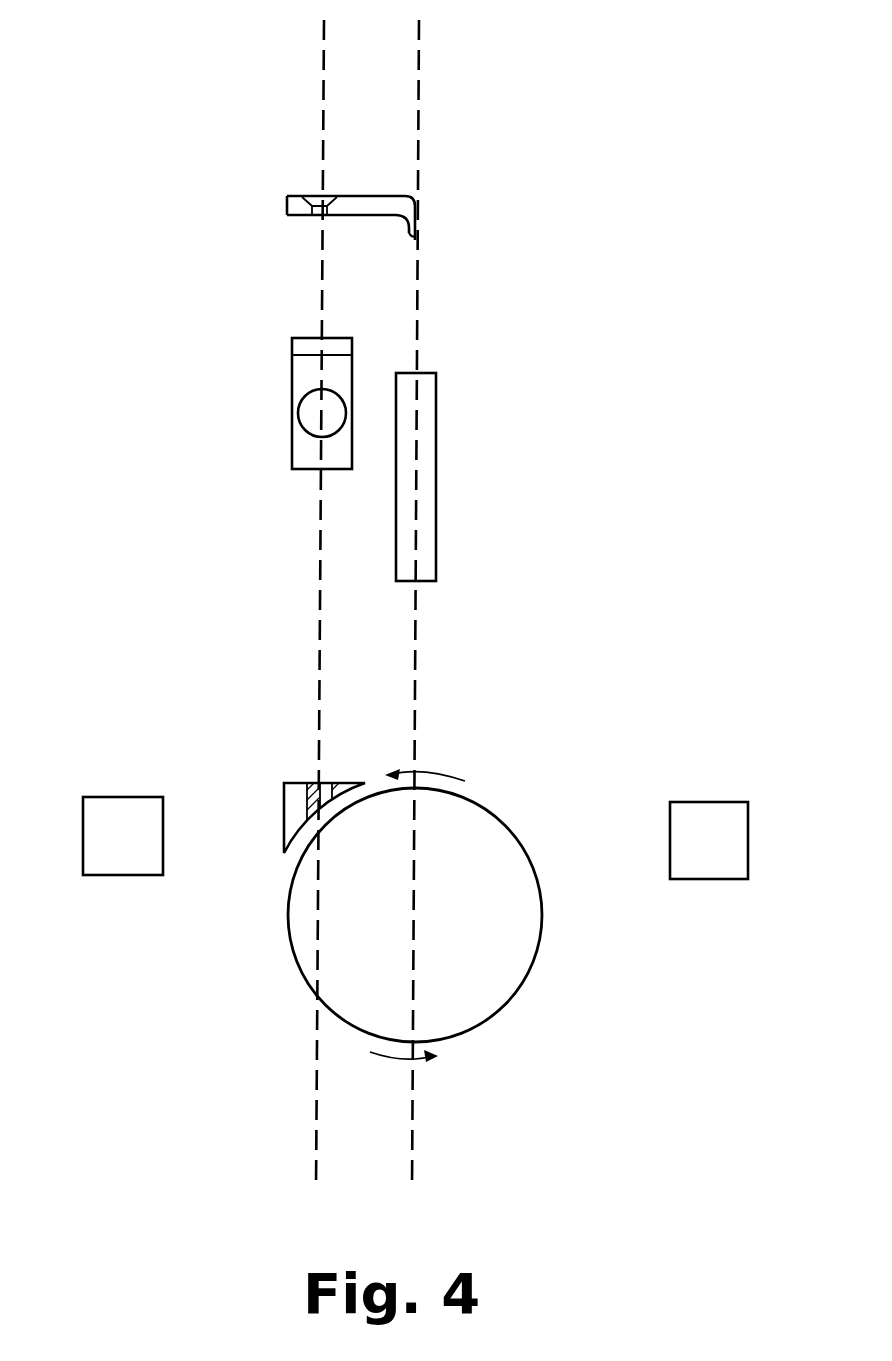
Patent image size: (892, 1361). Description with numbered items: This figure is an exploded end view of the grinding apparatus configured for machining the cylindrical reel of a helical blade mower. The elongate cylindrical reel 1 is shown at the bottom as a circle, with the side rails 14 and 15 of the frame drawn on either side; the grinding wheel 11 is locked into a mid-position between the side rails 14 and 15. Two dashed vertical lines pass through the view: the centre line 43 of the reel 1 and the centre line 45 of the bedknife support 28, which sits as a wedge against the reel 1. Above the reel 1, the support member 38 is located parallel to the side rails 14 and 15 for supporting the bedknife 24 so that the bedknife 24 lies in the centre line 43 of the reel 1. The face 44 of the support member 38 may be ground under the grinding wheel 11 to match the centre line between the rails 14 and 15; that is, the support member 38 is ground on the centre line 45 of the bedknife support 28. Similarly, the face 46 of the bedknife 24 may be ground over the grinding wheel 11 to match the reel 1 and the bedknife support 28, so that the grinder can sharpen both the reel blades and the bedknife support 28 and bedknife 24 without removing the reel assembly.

The reel 1 is at (474, 838).
The grinding wheel 11 is at (437, 486).
The side rail 14 is at (119, 827).
The side rail 15 is at (699, 823).
The bedknife 24 is at (375, 197).
The bedknife support 28 is at (298, 780).
The support member 38 is at (308, 377).
The centre line 43 is at (420, 53).
The face 44 is at (313, 338).
The centre line 45 is at (321, 52).
The face 46 is at (372, 214).